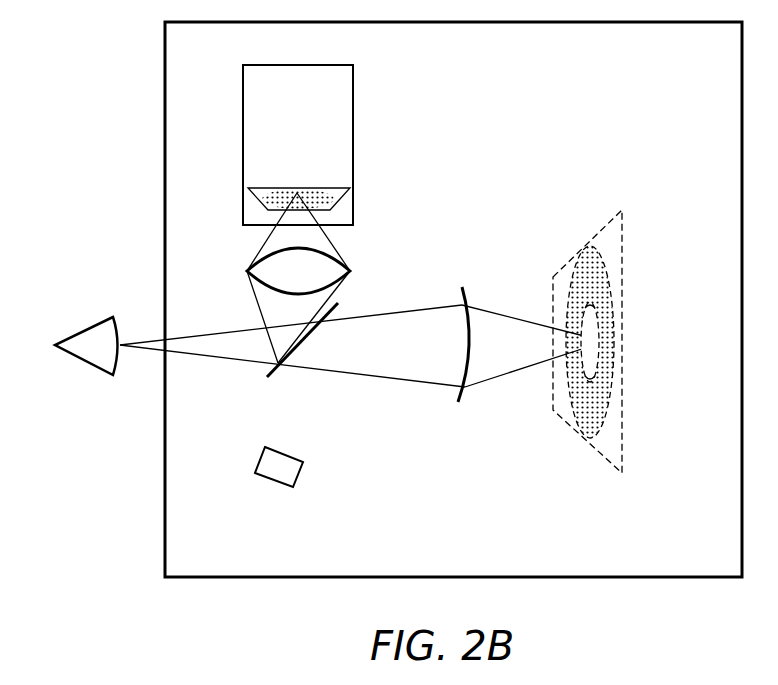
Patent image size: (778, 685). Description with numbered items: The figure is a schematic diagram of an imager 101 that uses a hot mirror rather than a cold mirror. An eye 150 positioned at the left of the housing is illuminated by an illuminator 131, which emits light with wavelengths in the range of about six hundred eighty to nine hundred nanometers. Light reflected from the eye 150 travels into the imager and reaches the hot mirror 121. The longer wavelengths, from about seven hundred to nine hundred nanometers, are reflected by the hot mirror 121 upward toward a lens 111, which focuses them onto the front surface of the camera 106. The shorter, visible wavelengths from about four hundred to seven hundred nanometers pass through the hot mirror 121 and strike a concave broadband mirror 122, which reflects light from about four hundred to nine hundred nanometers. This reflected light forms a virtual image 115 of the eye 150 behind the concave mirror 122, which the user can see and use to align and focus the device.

The imager 101 is at (453, 299).
The camera 106 is at (298, 145).
The lens 111 is at (330, 253).
The virtual image 115 is at (600, 300).
The hot mirror 121 is at (265, 373).
The concave broadband mirror 122 is at (466, 291).
The illuminator 131 is at (280, 488).
The eye 150 is at (100, 317).